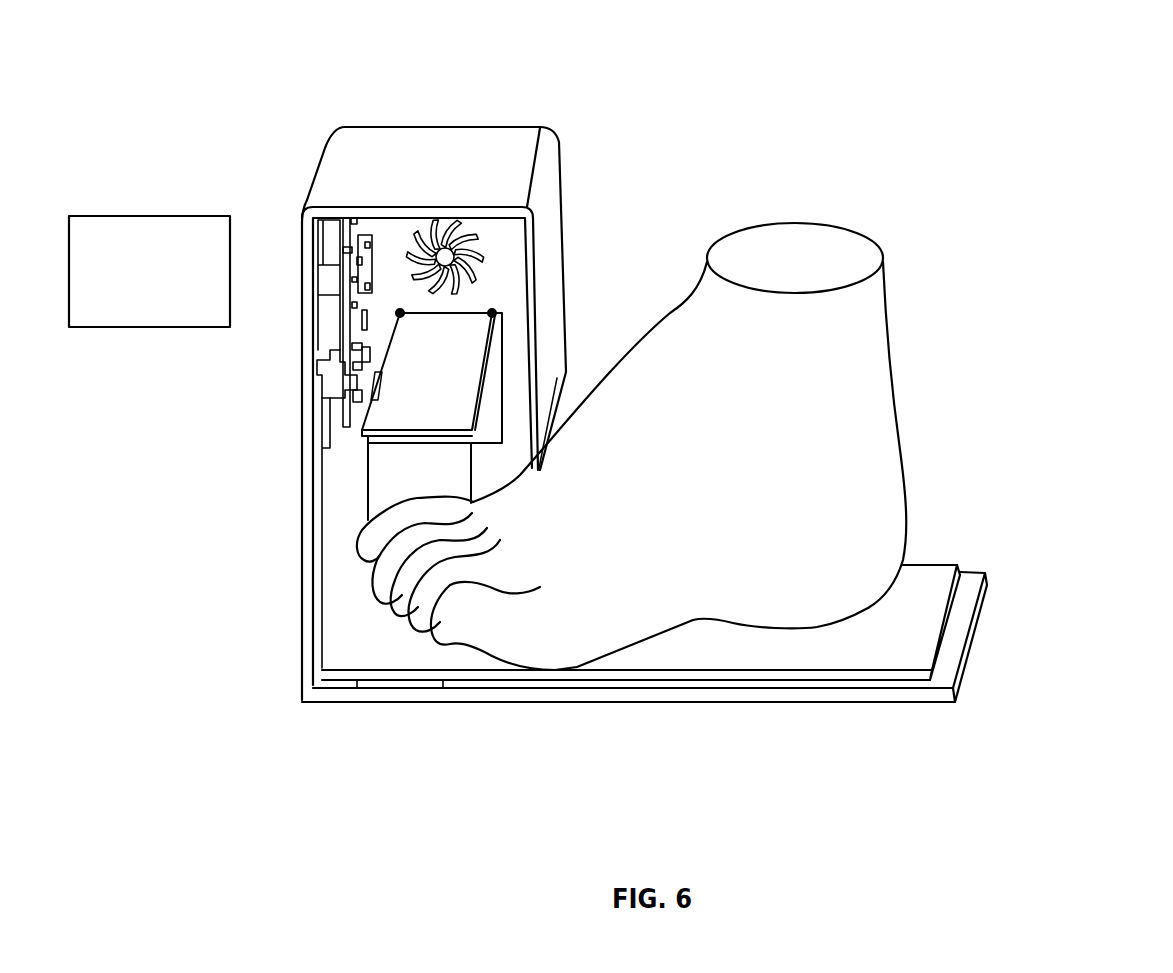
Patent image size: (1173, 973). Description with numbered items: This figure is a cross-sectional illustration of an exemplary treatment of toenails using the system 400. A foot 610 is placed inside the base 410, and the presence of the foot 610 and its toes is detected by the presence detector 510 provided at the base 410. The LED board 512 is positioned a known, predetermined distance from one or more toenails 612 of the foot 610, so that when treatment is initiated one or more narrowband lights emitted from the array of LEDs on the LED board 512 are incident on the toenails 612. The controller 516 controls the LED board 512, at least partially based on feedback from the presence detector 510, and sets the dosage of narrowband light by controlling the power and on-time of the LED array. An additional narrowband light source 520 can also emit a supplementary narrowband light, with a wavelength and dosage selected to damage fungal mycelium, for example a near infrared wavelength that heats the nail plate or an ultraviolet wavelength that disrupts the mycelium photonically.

The system 400 is at (752, 62).
The base 410 is at (917, 702).
The presence detector 510 is at (397, 700).
The LED board 512 is at (473, 310).
The controller 516 is at (360, 170).
The additional narrowband light source 520 is at (144, 210).
The foot 610 is at (893, 400).
The toenails 612 is at (247, 703).